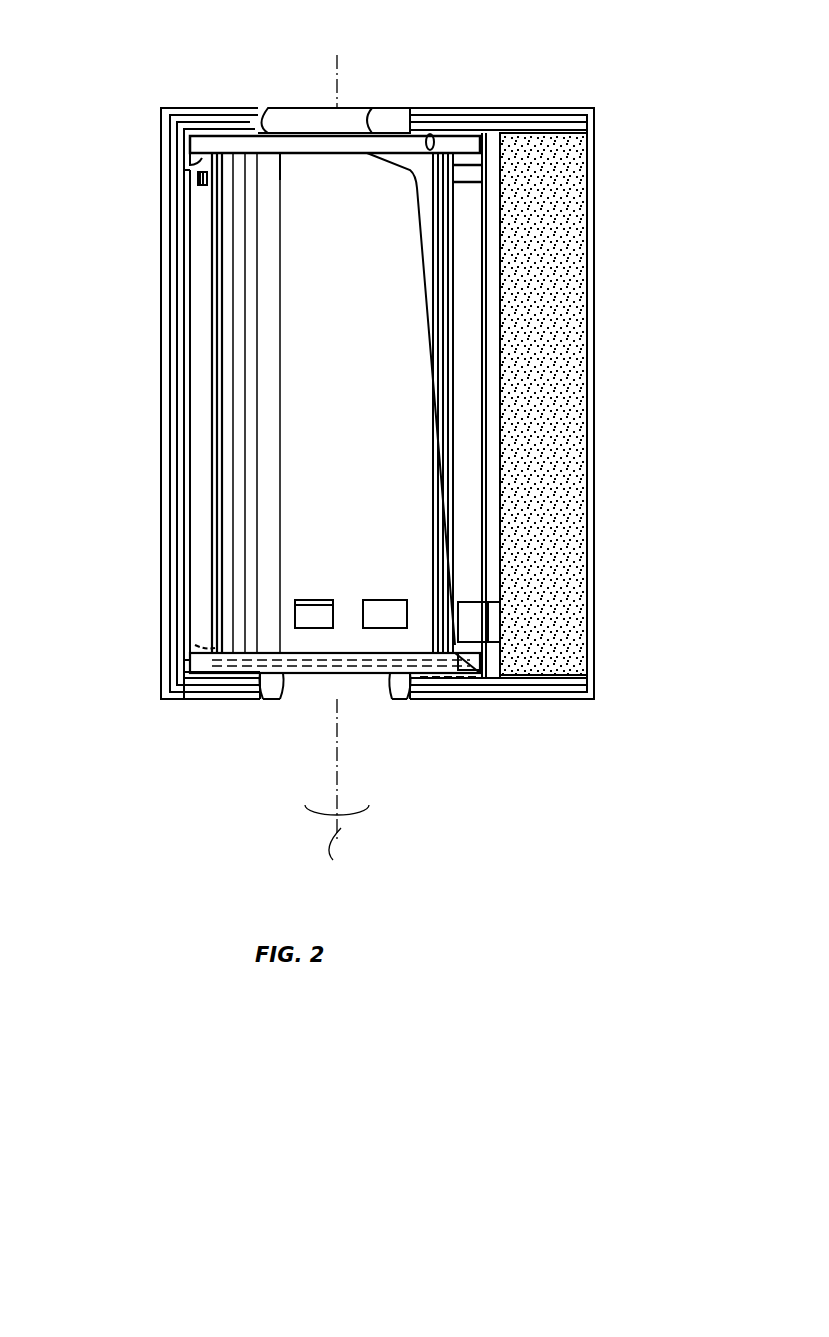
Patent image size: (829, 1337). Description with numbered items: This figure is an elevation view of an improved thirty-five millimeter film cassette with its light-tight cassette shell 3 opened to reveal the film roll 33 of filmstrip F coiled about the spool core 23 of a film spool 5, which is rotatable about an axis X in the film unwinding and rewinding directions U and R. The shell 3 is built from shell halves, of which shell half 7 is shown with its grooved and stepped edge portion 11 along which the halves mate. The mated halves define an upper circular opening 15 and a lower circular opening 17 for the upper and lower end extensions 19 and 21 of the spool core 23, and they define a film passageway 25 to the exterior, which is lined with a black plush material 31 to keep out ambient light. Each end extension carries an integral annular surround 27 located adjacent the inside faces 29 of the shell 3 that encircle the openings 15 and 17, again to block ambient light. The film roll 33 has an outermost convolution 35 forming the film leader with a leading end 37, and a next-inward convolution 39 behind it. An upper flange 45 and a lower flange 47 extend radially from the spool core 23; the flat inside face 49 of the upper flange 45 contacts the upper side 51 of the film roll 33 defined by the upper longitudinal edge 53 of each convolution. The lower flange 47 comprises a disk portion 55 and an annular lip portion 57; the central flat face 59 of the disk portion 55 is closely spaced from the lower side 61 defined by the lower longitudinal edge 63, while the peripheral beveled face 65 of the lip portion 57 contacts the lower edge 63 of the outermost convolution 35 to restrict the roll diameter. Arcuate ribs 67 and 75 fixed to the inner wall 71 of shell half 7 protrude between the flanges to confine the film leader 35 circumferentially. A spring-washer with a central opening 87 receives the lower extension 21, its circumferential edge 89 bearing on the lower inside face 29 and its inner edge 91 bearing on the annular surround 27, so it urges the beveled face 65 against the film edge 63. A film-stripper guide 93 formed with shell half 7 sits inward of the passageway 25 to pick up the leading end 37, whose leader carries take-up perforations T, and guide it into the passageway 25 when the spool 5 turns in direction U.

The cassette shell 3 is at (367, 383).
The film spool 5 is at (249, 402).
The shell half 7 is at (210, 108).
The grooved and stepped edge portion 11 is at (175, 522).
The upper circular opening 15 is at (266, 105).
The lower circular opening 17 is at (258, 682).
The upper end extension 19 is at (390, 108).
The lower end extension 21 is at (352, 690).
The spool core 23 is at (293, 102).
The film passageway 25 is at (588, 405).
The annular surround 27 is at (362, 133).
The inside face 29 is at (430, 135).
The plush material 31 is at (568, 162).
The film roll 33 is at (249, 402).
The outermost convolution 35 is at (215, 342).
The leading end 37 is at (440, 432).
The next-inward convolution 39 is at (440, 322).
The upper flange 45 is at (459, 128).
The lower flange 47 is at (185, 665).
The inside face 49 is at (190, 160).
The upper side 51 is at (329, 189).
The upper longitudinal edge 53 is at (308, 152).
The disk portion 55 is at (335, 674).
The annular lip portion 57 is at (483, 675).
The central flat face 59 is at (300, 655).
The lower side 61 is at (335, 629).
The lower longitudinal edge 63 is at (236, 650).
The peripheral beveled face 65 is at (205, 645).
The arcuate rib 67 is at (455, 172).
The inner wall 71 is at (200, 248).
The arcuate rib 75 is at (212, 185).
The central opening 87 is at (463, 680).
The circumferential edge 89 is at (183, 692).
The inner edge 91 is at (270, 690).
The film-stripper guide 93 is at (487, 600).
The filmstrip F is at (203, 292).
The take-up perforations T is at (365, 605).
The rewinding direction R is at (310, 803).
The unwinding direction U is at (357, 803).
The axis X is at (330, 858).